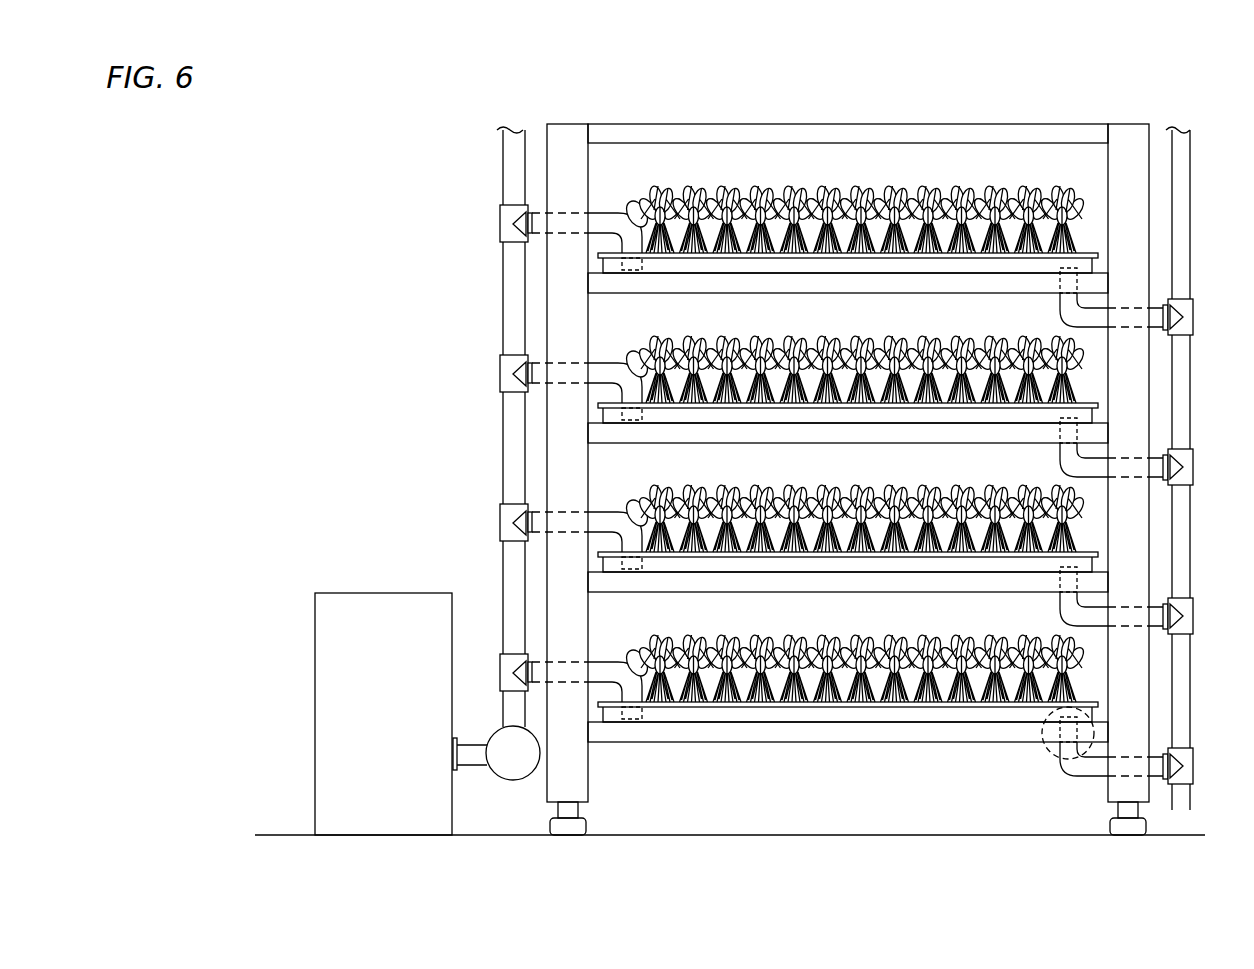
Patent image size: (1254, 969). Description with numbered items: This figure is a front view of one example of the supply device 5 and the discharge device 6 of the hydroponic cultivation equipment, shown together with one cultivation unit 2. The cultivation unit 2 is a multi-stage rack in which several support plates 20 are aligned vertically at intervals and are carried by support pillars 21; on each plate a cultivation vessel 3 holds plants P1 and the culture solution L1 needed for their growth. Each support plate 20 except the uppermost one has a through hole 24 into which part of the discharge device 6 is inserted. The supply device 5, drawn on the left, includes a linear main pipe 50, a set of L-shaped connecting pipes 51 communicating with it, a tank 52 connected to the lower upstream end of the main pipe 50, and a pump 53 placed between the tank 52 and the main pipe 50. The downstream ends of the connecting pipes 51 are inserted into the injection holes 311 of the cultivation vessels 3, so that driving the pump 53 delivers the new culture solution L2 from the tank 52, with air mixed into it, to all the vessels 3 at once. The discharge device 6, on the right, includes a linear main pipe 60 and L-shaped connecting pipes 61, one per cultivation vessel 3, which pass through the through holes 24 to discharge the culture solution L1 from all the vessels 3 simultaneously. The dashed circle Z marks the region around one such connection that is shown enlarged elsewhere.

The cultivation unit 2 is at (1127, 132).
The cultivation vessel 3 is at (1070, 252).
The supply device 5 is at (511, 304).
The discharge device 6 is at (1185, 405).
The support plate 20 is at (957, 130).
The support pillar 21 is at (573, 135).
The through hole 24 is at (1058, 284).
The main pipe 50 is at (512, 445).
The connecting pipe 51 is at (604, 214).
The tank 52 is at (368, 607).
The pump 53 is at (509, 775).
The main pipe 60 is at (1182, 214).
The connecting pipe 61 is at (1085, 316).
The injection hole 311 is at (633, 244).
The culture solution L1 is at (790, 110).
The new culture solution L2 is at (336, 687).
The plant P1 is at (698, 210).
The enlarged region Z is at (1052, 756).